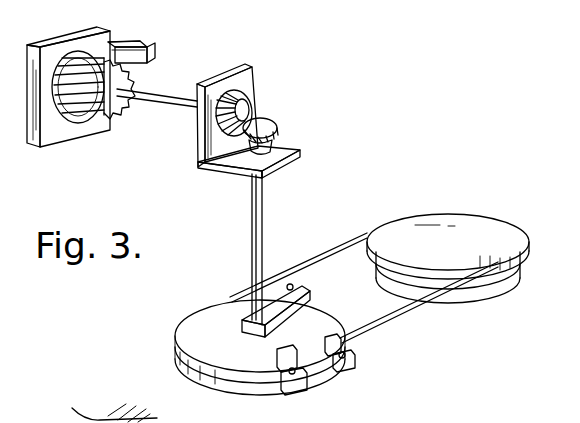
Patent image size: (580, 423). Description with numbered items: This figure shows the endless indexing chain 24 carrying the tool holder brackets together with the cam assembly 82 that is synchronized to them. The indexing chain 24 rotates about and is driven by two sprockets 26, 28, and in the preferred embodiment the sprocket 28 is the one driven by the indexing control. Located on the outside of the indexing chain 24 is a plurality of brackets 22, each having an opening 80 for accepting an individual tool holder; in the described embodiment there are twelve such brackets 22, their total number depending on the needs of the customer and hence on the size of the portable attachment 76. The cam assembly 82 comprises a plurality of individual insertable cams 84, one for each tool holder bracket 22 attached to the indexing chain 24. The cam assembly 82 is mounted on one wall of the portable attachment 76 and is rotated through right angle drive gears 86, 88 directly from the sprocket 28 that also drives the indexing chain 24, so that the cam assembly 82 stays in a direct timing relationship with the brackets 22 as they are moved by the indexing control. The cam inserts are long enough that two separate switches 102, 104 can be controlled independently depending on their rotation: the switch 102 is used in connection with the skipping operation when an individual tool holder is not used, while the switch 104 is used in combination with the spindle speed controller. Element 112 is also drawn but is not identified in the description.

The bracket 22 is at (308, 383).
The indexing chain 24 is at (367, 237).
The sprocket 26 is at (497, 264).
The sprocket 28 is at (173, 318).
The portable attachment 76 is at (107, 28).
The opening 80 is at (357, 342).
The cam assembly 82 is at (92, 128).
The insertable cam 84 is at (128, 78).
The right angle drive gear 86 is at (248, 100).
The right angle drive gear 88 is at (278, 131).
The switch 102 is at (157, 46).
The switch 104 is at (147, 39).
The cable 112 is at (102, 405).